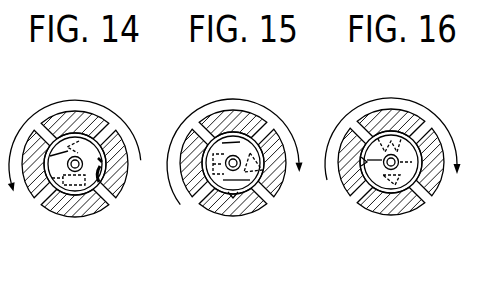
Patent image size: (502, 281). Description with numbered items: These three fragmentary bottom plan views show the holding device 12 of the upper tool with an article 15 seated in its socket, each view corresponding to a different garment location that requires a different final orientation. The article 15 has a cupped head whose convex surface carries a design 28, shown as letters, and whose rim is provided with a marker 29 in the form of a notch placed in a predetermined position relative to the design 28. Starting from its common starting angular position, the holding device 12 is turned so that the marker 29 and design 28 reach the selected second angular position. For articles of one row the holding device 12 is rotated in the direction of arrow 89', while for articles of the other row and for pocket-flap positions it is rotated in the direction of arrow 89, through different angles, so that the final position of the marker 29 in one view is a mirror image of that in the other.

In FIG. 14, the arrow 89' is at (74, 125).
In FIG. 15, the arrow 89 is at (234, 131).
In FIG. 16, the arrow 89 is at (392, 119).
In FIG. 14, the design 28 is at (57, 207).
In FIG. 14, the marker 29 is at (94, 212).
In FIG. 15, the article holding device 12 is at (216, 217).
In FIG. 16, the article holding device 12 is at (378, 213).
In FIG. 16, the article 15 is at (418, 188).